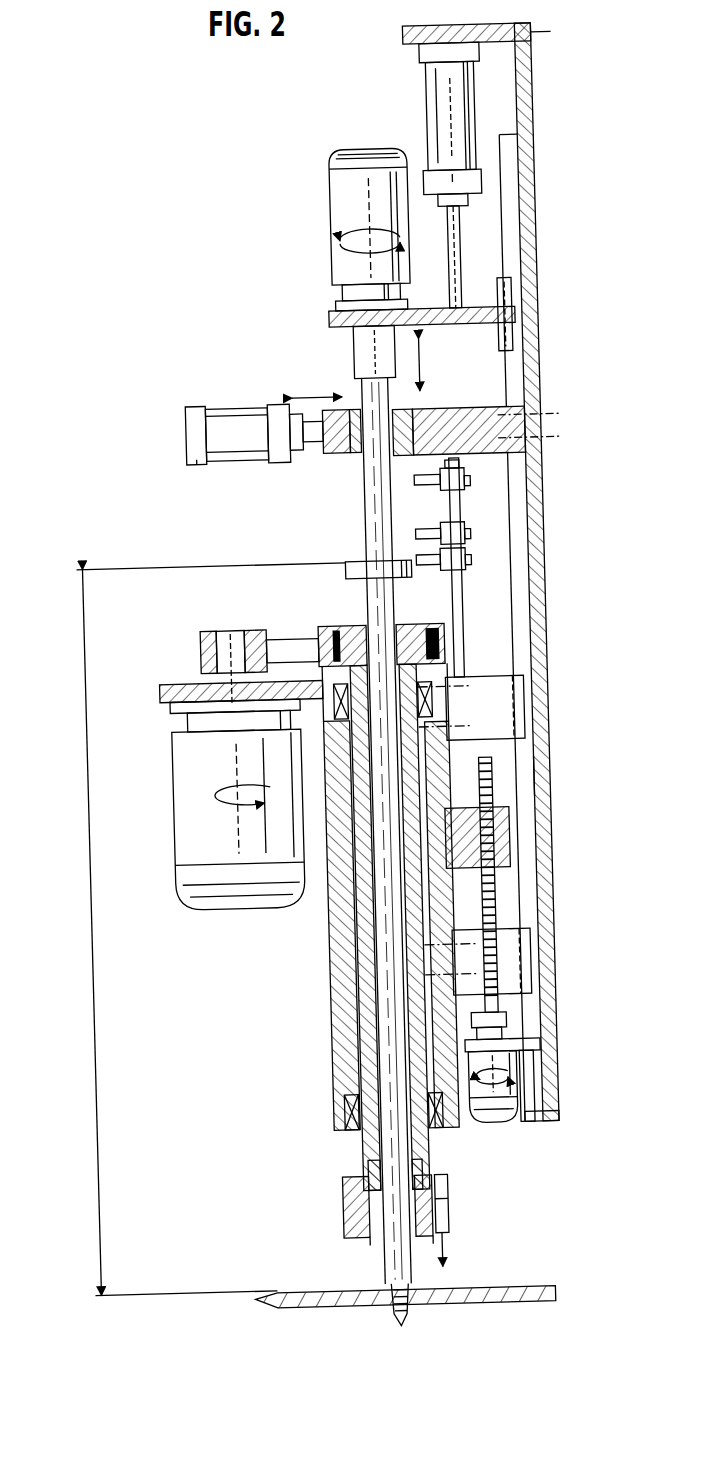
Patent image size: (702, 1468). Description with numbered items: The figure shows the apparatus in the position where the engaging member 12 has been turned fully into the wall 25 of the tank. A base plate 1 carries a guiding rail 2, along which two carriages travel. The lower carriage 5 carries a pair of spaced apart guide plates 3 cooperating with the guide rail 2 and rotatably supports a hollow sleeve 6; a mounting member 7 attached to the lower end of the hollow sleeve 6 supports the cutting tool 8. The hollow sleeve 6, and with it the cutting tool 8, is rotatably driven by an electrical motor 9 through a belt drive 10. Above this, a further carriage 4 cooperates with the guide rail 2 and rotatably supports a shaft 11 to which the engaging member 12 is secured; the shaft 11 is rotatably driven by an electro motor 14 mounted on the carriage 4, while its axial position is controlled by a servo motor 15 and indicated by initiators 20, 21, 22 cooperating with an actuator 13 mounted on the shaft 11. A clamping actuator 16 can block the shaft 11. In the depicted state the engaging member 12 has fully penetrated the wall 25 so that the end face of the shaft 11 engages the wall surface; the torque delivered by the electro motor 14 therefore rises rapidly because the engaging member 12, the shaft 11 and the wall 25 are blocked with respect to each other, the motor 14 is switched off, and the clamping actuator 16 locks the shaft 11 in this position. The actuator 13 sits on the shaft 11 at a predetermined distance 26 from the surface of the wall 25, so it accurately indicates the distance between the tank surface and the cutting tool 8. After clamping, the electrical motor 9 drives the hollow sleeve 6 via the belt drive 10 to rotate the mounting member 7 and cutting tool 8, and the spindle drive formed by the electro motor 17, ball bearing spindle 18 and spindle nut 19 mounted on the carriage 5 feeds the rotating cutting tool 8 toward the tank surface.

The base plate 1 is at (540, 630).
The guiding rail 2 is at (526, 792).
The guide plates 3 is at (520, 712).
The further carriage 4 is at (522, 316).
The carriage 5 is at (345, 934).
The hollow sleeve 6 is at (336, 1036).
The mounting member 7 is at (335, 1210).
The cutting tool 8 is at (440, 1250).
The electrical motor 9 is at (171, 782).
The belt drive 10 is at (202, 648).
The shaft 11 is at (384, 976).
The engaging member 12 is at (378, 1316).
The actuator 13 is at (354, 562).
The electro motor 14 is at (343, 222).
The servo motor 15 is at (490, 115).
The clamping actuator 16 is at (336, 452).
The electro motor 17 is at (500, 1094).
The ball bearing spindle 18 is at (490, 904).
The spindle nut 19 is at (500, 838).
The initiator 20 is at (476, 562).
The initiator 21 is at (476, 535).
The initiator 22 is at (476, 484).
The wall 25 is at (496, 1290).
The predetermined distance 26 is at (86, 894).